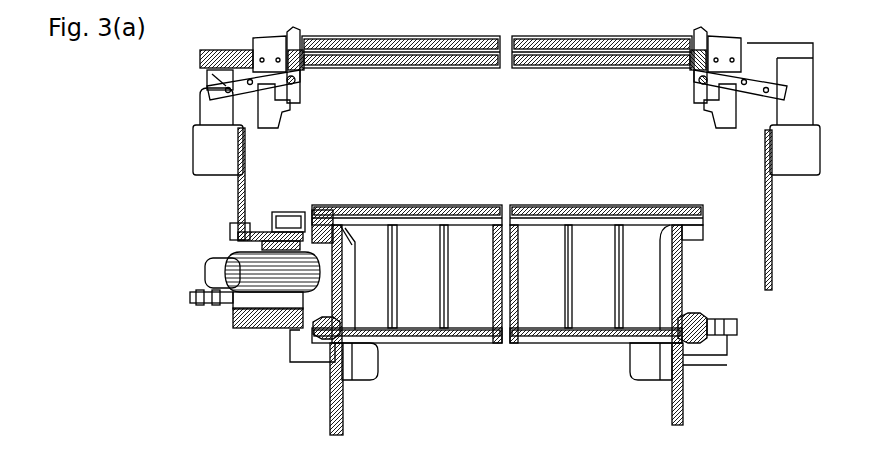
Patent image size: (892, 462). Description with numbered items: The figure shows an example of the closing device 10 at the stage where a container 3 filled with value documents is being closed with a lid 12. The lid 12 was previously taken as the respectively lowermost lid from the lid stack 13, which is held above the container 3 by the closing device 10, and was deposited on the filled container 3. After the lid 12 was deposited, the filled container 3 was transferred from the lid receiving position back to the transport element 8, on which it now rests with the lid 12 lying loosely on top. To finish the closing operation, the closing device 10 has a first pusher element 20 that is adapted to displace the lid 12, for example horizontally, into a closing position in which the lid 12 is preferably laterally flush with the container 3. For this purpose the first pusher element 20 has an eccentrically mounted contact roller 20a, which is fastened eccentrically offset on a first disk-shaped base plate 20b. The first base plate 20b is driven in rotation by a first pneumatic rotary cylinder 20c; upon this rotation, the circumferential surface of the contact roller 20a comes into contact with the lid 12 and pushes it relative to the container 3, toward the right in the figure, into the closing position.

The container 3 is at (688, 265).
The transport element 8 is at (360, 380).
The closing device 10 is at (757, 305).
The lid 12 is at (428, 205).
The lid stack 13 is at (582, 88).
The first pusher element 20 is at (293, 162).
The contact roller 20a is at (312, 205).
The first disk-shaped base plate 20b is at (262, 228).
The first pneumatic rotary cylinder 20c is at (255, 330).